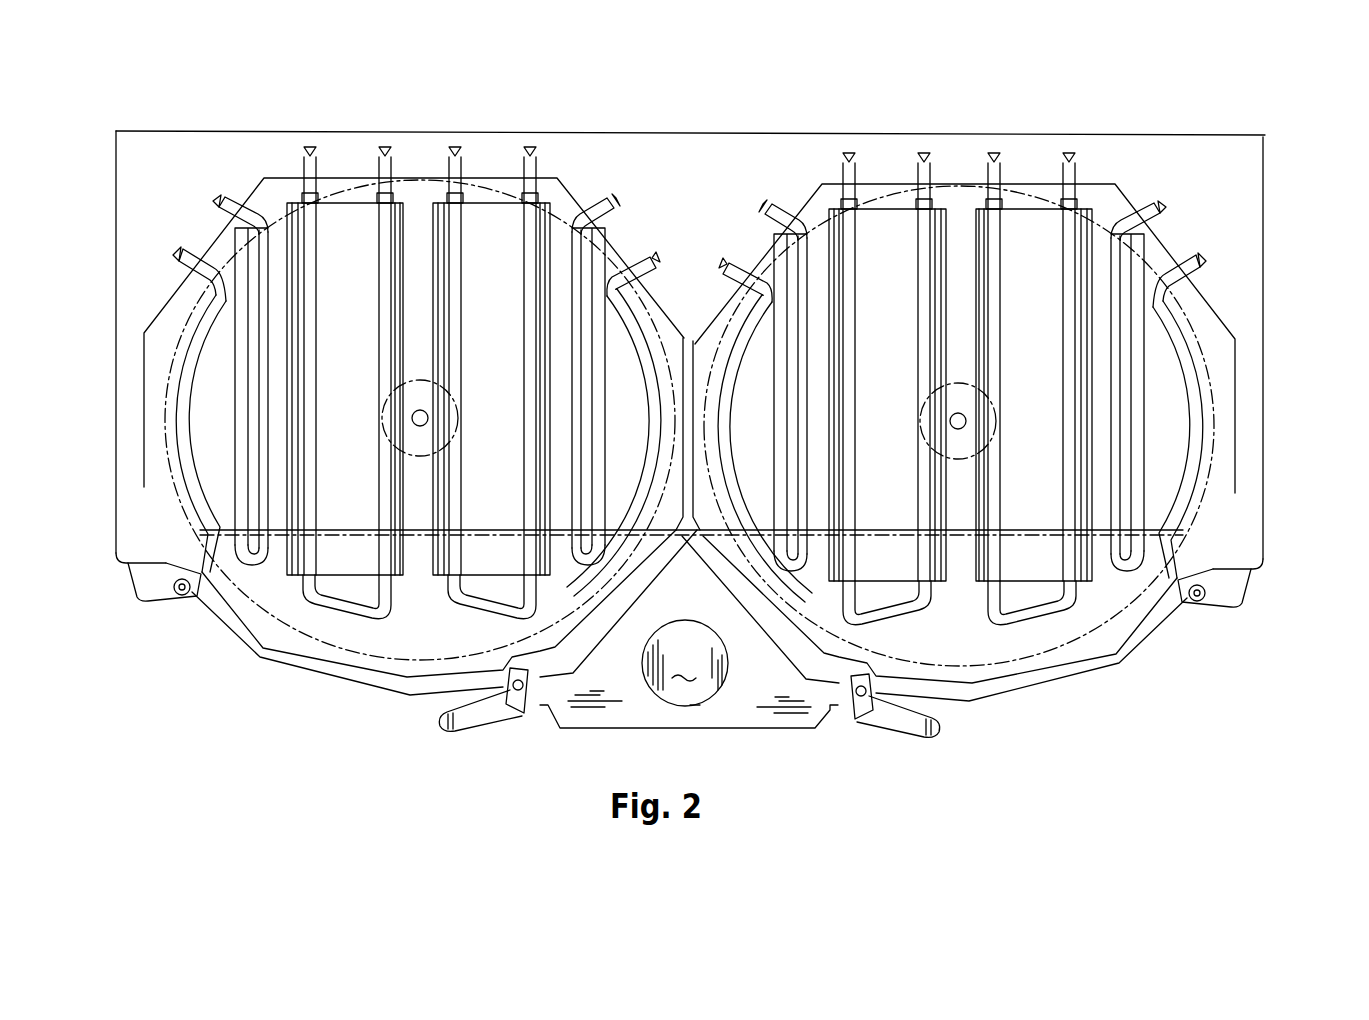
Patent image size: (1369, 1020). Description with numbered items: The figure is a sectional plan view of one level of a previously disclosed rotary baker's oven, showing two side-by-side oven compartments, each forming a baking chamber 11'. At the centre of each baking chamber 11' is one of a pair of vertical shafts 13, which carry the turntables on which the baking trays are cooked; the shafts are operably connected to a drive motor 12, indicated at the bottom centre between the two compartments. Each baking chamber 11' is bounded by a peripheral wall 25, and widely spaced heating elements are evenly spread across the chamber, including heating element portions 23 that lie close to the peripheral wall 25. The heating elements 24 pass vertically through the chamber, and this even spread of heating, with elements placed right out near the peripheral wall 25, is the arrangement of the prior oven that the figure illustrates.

The baking chamber 11' is at (750, 364).
The drive motor 12 is at (685, 663).
The vertical shaft 13 is at (427, 412).
The heating element portion 23 is at (1197, 367).
The tube connections 24 is at (446, 157).
The peripheral wall 25 is at (143, 415).